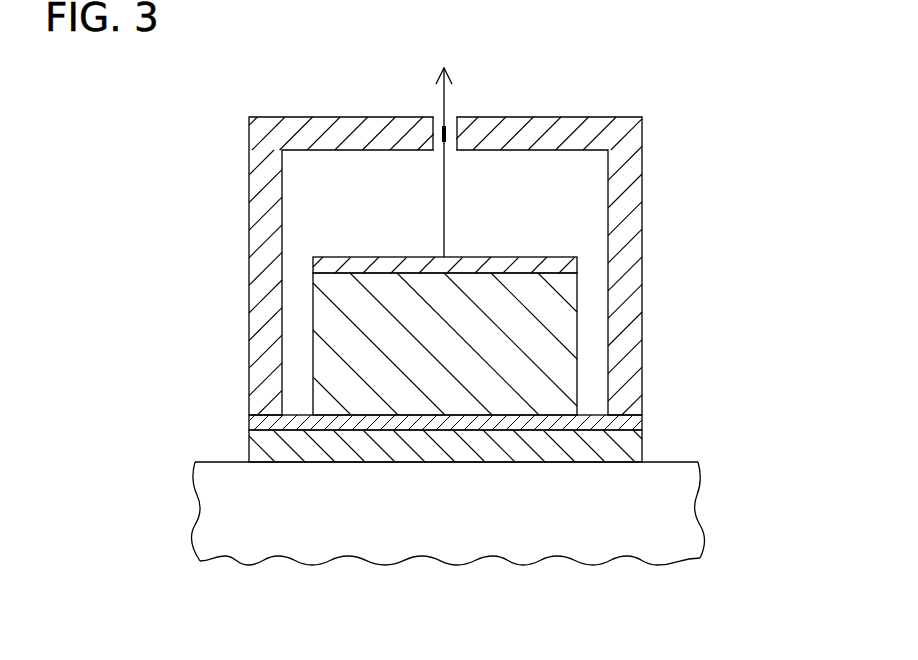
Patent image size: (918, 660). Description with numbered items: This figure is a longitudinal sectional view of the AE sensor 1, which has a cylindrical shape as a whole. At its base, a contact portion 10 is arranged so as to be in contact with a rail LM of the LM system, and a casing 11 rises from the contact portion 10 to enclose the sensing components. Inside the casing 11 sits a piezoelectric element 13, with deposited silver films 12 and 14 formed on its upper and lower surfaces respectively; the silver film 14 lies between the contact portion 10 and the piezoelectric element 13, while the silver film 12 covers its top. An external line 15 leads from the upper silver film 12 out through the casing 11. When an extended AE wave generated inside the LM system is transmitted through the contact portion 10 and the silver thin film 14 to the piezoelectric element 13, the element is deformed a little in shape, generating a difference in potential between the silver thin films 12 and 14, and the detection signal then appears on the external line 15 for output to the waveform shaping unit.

The AE sensor 1 is at (677, 300).
The contact portion 10 is at (628, 447).
The casing 11 is at (630, 190).
The deposited silver film 12 is at (320, 265).
The piezoelectric element 13 is at (322, 355).
The deposited silver film 14 is at (627, 424).
The external line 15 is at (445, 185).
The rail LM is at (688, 508).